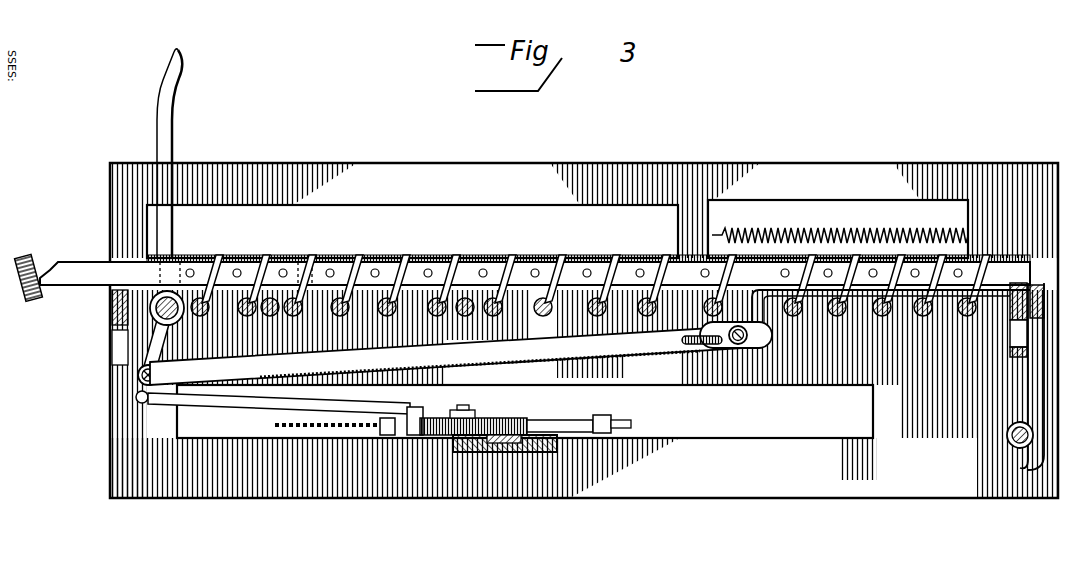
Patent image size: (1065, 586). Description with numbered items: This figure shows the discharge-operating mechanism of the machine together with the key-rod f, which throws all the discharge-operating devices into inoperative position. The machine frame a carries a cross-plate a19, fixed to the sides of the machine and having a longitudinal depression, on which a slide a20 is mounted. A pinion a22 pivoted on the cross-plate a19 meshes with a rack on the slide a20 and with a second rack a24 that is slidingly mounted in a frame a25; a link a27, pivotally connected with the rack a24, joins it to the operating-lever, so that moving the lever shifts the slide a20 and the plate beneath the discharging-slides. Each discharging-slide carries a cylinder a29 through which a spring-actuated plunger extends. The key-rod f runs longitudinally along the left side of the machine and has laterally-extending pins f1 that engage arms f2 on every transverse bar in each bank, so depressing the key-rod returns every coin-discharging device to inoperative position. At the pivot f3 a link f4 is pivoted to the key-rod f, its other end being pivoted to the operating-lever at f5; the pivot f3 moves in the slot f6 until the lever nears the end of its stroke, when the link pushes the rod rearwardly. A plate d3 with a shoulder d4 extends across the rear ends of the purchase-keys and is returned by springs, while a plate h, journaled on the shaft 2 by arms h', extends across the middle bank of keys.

The frame a is at (742, 175).
The cylinder a29 is at (162, 130).
The key-rod f is at (108, 275).
The laterally-extending pins f1 is at (360, 258).
The arms f2 is at (300, 262).
The plate d3 is at (848, 236).
The pivot f5 is at (140, 372).
The link f4 is at (447, 355).
The pivot f3 is at (764, 335).
The slot f6 is at (733, 338).
The link a27 is at (285, 414).
The pinion a22 is at (465, 428).
The rack a24 is at (550, 422).
The frame a25 is at (602, 420).
The cross-plate a19 is at (490, 452).
The slide a20 is at (525, 455).
The shoulder d4 is at (1010, 300).
The plate h is at (993, 342).
The arms h' is at (993, 376).
The shaft 2 is at (1006, 435).